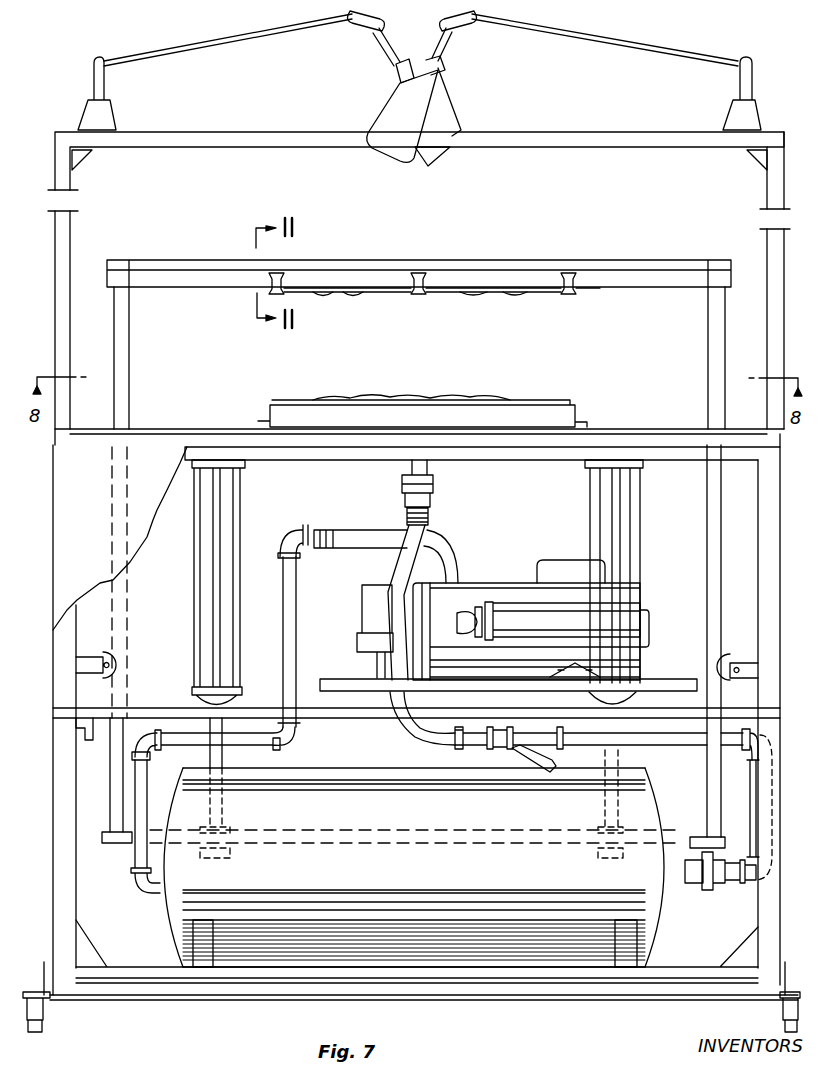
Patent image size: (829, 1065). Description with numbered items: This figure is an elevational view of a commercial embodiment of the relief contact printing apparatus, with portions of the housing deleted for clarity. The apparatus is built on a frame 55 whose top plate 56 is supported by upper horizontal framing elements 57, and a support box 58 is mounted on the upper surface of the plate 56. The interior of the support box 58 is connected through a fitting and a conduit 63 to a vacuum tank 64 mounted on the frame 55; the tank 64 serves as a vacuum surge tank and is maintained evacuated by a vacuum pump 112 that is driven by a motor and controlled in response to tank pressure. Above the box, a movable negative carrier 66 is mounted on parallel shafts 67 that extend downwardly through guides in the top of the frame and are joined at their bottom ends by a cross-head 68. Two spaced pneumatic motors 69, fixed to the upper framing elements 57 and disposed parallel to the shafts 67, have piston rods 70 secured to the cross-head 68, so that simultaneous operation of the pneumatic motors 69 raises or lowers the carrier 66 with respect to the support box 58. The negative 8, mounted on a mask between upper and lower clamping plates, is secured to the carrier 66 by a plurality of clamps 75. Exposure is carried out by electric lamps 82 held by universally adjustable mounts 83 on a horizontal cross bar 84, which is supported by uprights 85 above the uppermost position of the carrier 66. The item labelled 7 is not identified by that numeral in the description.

The workpiece / tray contents 7 is at (352, 400).
The negative 8 is at (349, 297).
The frame 55 is at (72, 905).
The top plate 56 is at (182, 425).
The upper horizontal framing elements 57 is at (530, 455).
The support box 58 is at (583, 415).
The conduit 63 is at (404, 566).
The vacuum tank 64 is at (432, 820).
The negative carrier 66 is at (170, 262).
The shafts 67 is at (130, 375).
The cross-head 68 is at (128, 836).
The pneumatic motors 69 is at (208, 602).
The piston rods 70 is at (215, 757).
The clamps 75 is at (404, 298).
The electric lamps 82 is at (410, 110).
The universally adjustable mounts 83 is at (288, 40).
The horizontal cross bar 84 is at (160, 148).
The uprights 85 is at (67, 240).
The vacuum pump 112 is at (637, 597).